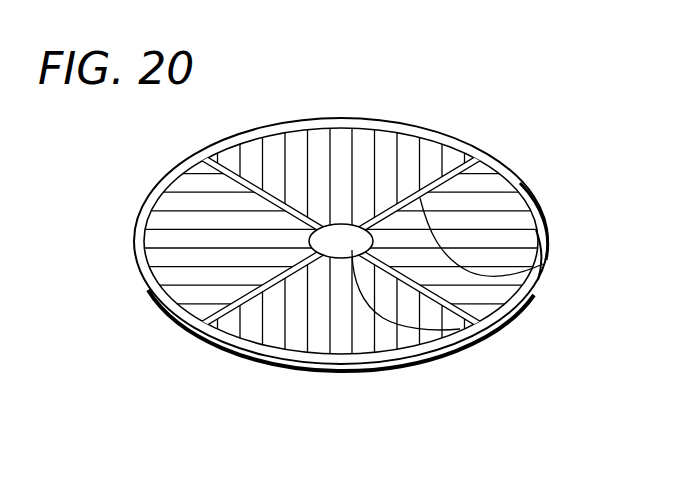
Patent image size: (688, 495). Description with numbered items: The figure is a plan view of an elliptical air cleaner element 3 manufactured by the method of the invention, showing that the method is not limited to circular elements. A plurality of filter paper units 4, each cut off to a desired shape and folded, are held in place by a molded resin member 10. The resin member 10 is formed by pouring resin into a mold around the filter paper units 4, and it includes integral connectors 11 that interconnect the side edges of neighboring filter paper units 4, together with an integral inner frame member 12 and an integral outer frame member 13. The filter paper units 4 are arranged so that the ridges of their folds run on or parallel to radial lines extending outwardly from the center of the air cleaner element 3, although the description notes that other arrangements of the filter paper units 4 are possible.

The air cleaner element 3 is at (400, 112).
The filter paper unit 4 is at (407, 172).
The resin member 10 is at (552, 190).
The connector 11 is at (545, 264).
The inner frame member 12 is at (461, 329).
The outer frame member 13 is at (485, 154).